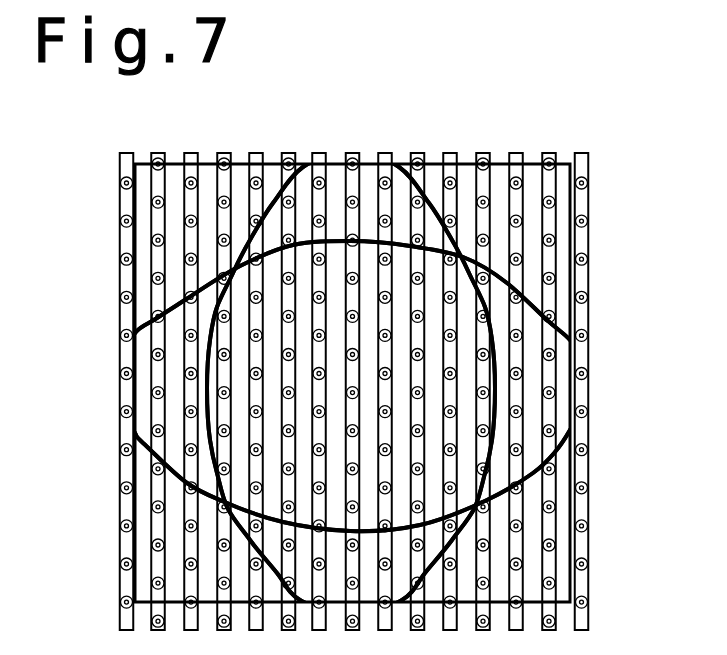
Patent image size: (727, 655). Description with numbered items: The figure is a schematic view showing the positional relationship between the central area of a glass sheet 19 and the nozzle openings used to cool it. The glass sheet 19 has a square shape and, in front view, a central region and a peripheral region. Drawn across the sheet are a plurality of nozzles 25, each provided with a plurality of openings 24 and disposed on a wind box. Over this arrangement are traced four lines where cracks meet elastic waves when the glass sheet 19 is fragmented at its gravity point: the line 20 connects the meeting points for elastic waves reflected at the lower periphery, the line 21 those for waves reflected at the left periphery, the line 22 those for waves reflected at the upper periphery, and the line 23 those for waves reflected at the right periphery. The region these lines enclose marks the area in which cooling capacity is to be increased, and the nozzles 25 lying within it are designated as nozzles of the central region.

The glass sheet 19 is at (571, 200).
The line 20 is at (519, 479).
The line 21 is at (203, 390).
The line 22 is at (537, 301).
The line 23 is at (497, 368).
The opening 24 is at (122, 223).
The nozzle 25 is at (127, 164).